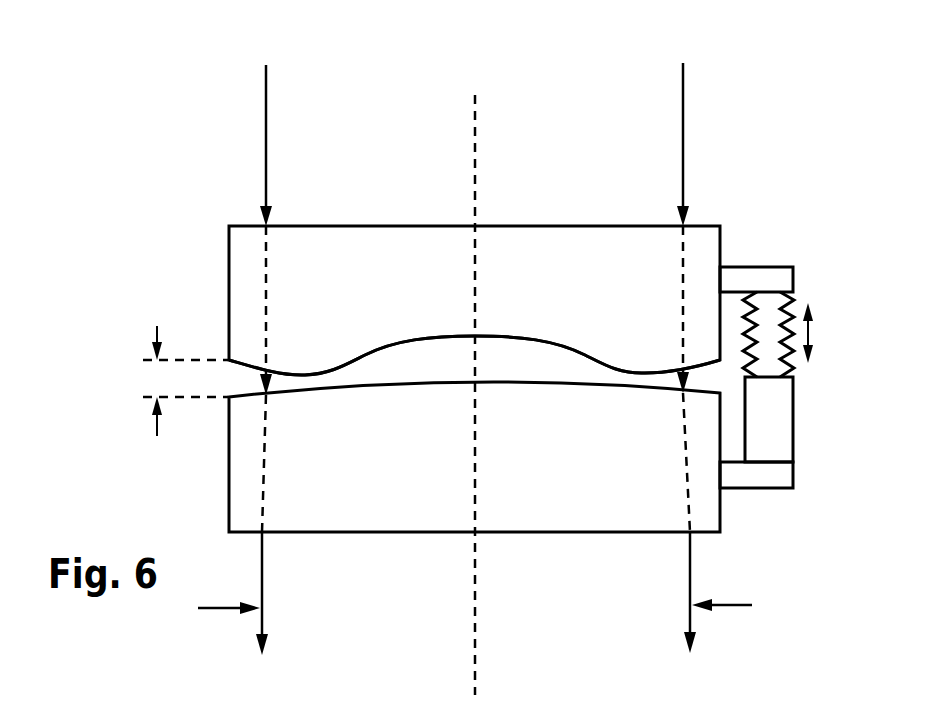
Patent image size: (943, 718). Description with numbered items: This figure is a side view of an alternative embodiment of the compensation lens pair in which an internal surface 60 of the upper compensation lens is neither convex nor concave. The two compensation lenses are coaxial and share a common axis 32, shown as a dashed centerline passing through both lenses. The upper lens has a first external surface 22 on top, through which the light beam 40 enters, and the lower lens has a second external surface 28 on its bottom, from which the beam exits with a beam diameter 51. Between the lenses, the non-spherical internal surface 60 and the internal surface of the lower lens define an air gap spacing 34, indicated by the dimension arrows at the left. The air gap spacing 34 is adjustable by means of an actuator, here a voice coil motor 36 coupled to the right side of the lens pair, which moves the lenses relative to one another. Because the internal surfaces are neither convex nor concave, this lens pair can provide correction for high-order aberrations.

The first external surface 22 is at (398, 226).
The second external surface 28 is at (405, 535).
The common axis 32 is at (475, 167).
The air gap spacing 34 is at (157, 327).
The voice coil motor 36 is at (766, 377).
The light beam 40 is at (682, 138).
The beam diameter 51 is at (713, 605).
The internal surface 60 is at (359, 358).